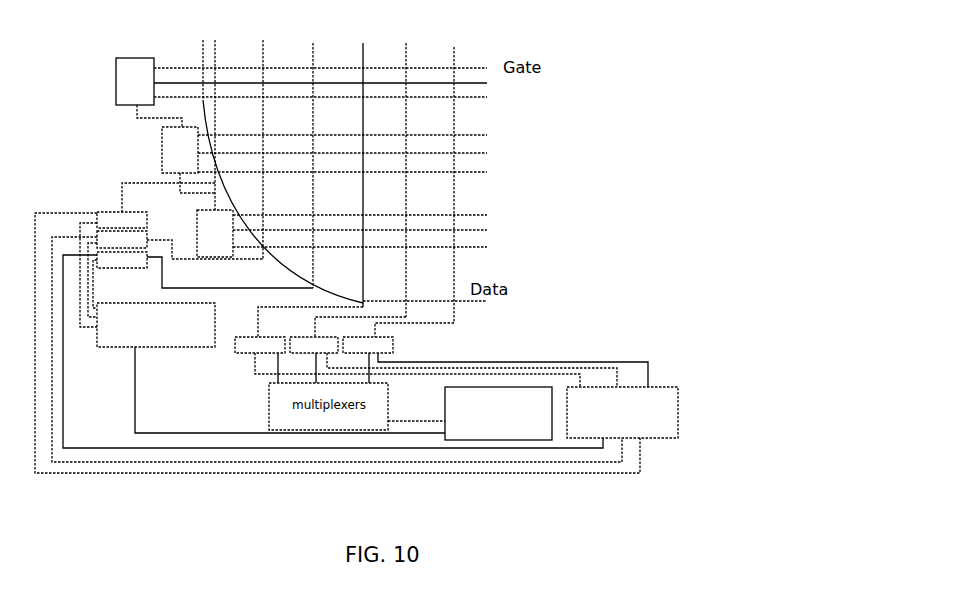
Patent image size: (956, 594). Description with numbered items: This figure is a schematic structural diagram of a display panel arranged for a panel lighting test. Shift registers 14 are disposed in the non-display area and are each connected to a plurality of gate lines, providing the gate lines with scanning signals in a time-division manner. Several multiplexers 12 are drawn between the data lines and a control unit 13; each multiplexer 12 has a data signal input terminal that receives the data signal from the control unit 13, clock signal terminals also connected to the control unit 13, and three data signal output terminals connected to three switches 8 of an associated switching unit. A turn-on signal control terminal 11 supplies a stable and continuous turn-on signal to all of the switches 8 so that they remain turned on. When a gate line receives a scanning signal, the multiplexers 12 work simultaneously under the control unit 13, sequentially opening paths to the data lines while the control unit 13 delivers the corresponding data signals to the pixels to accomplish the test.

The switch 8 is at (118, 211).
The turn-on signal control terminal 11 is at (657, 385).
The multiplexer 12 is at (170, 303).
The control unit 13 is at (443, 413).
The shift register 14 is at (135, 58).